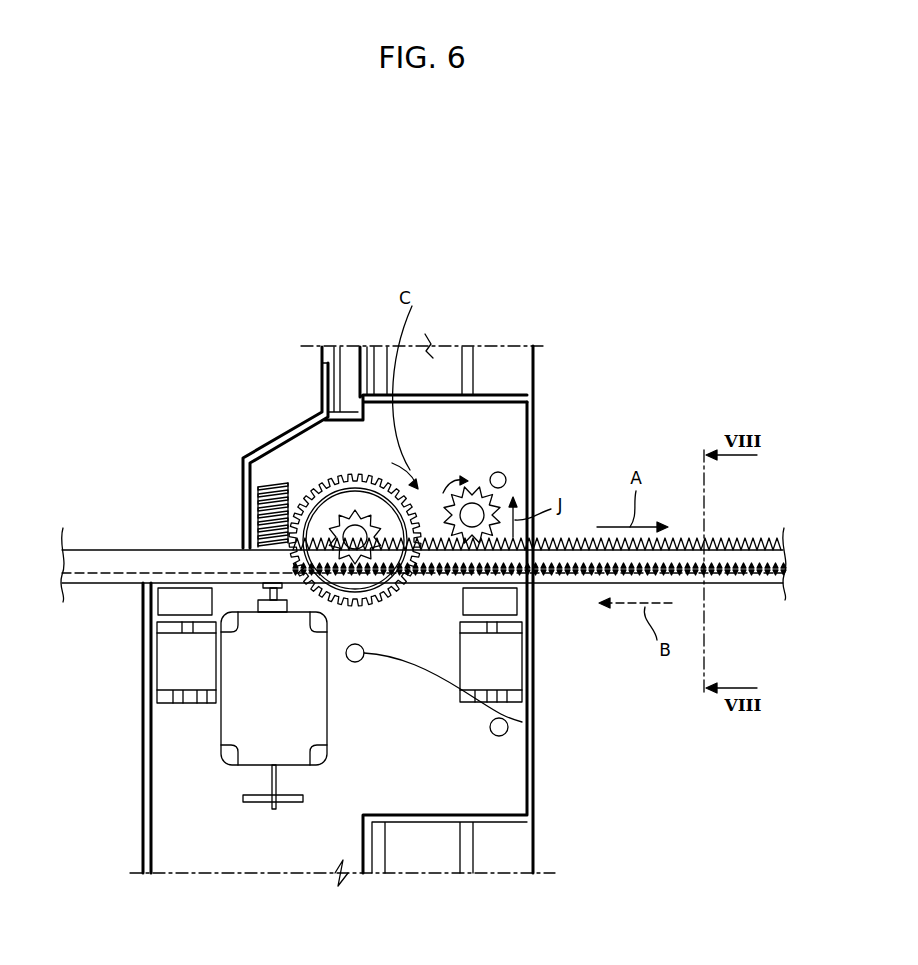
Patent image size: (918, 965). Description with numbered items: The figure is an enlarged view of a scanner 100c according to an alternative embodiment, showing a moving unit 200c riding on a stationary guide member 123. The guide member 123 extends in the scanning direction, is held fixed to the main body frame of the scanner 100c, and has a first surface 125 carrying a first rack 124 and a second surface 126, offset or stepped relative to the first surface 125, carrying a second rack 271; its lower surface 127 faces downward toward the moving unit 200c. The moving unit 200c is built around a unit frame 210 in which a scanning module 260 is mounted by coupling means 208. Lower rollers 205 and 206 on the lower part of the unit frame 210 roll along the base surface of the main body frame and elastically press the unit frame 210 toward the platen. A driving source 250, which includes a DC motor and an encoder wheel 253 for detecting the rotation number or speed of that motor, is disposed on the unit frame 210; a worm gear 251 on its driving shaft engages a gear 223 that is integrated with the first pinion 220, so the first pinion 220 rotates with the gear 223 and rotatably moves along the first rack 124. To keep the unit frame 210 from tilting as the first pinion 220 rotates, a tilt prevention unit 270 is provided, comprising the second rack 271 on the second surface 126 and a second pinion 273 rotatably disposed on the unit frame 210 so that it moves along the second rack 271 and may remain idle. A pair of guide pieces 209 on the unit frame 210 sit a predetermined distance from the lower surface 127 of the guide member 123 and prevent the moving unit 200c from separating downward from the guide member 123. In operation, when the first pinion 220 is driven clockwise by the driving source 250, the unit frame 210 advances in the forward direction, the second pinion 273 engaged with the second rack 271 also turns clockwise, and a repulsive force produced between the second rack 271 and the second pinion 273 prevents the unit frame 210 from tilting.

The scanner 100c is at (567, 290).
The moving unit 200c is at (277, 415).
The unit frame 210 is at (534, 368).
The scanning module 260 is at (447, 367).
The gear 223 is at (302, 483).
The first pinion 220 is at (262, 493).
The worm gear 251 is at (340, 523).
The second surface 126 is at (93, 550).
The first surface 125 is at (136, 568).
The first rack 124 is at (437, 584).
The guide member 123 is at (730, 584).
The lower surface 127 is at (770, 584).
The second rack 271 is at (585, 540).
The second pinion 273 is at (505, 484).
The tilt prevention unit 270 is at (617, 429).
The guide pieces 209 is at (165, 604).
The lower roller 205 is at (170, 667).
The lower roller 206 is at (513, 650).
The driving source 250 is at (237, 722).
The encoder wheel 253 is at (257, 803).
The coupling means 208 is at (508, 725).